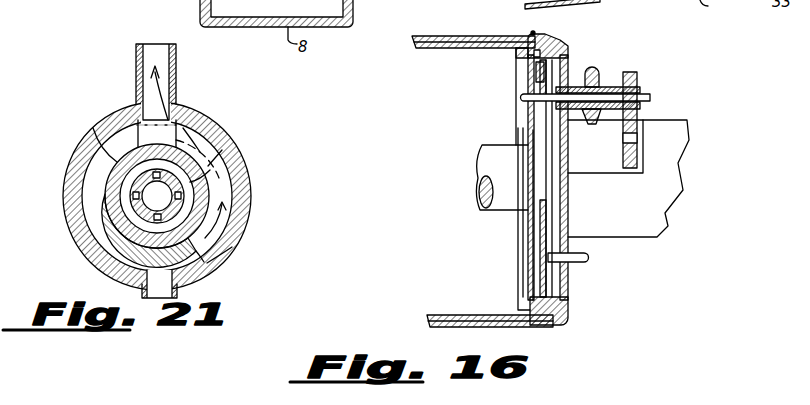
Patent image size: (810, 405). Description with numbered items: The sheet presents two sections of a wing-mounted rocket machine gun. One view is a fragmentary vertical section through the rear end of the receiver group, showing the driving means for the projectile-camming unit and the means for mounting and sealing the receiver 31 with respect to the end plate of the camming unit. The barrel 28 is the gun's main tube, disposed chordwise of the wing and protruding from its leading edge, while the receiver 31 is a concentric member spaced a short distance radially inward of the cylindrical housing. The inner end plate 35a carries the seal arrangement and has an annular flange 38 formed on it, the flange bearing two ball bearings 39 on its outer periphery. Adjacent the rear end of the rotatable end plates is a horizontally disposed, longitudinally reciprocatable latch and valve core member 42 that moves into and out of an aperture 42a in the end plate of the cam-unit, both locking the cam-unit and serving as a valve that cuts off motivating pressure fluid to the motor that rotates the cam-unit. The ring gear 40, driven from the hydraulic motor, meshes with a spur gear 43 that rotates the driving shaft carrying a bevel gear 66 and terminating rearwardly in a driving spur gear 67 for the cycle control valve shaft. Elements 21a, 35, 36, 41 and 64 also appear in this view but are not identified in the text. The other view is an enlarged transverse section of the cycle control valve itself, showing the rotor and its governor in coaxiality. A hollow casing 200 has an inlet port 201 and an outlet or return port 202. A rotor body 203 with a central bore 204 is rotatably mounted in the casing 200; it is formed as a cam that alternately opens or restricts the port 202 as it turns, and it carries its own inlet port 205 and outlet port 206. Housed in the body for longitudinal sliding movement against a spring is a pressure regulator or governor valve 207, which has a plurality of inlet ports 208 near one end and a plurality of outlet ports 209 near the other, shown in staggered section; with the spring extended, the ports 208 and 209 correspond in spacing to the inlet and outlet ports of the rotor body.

In FIG. 21, the hollow casing 200 is at (250, 240).
In FIG. 21, the inlet port 201 is at (142, 290).
In FIG. 21, the outlet or return port 202 is at (136, 62).
In FIG. 21, the rotor body 203 is at (92, 172).
In FIG. 21, the central bore 204 is at (118, 150).
In FIG. 21, the inlet port 205 is at (220, 128).
In FIG. 21, the outlet port 206 is at (170, 198).
In FIG. 21, the pressure regulator valve 207 is at (212, 168).
In FIG. 21, the inlet ports 208 is at (133, 192).
In FIG. 21, the outlet ports 209 is at (93, 128).
In FIG. 16, the body 21a is at (570, 190).
In FIG. 16, the barrel 28 is at (466, 36).
In FIG. 16, the receiver 31 is at (470, 49).
In FIG. 16, the shaft 35 is at (478, 190).
In FIG. 16, the inner end plate 35a is at (528, 120).
In FIG. 16, the collar 36 is at (566, 72).
In FIG. 16, the annular flange 38 is at (528, 58).
In FIG. 16, the ball bearings 39 is at (560, 46).
In FIG. 16, the ring gear 40 is at (568, 62).
In FIG. 16, the pin 41 is at (530, 86).
In FIG. 16, the latch and valve core member 42 is at (518, 226).
In FIG. 16, the aperture 42a is at (530, 240).
In FIG. 16, the spur gear 43 is at (554, 150).
In FIG. 16, the pin 64 is at (568, 280).
In FIG. 16, the bevel gear 66 is at (600, 72).
In FIG. 16, the driving spur gear 67 is at (637, 72).